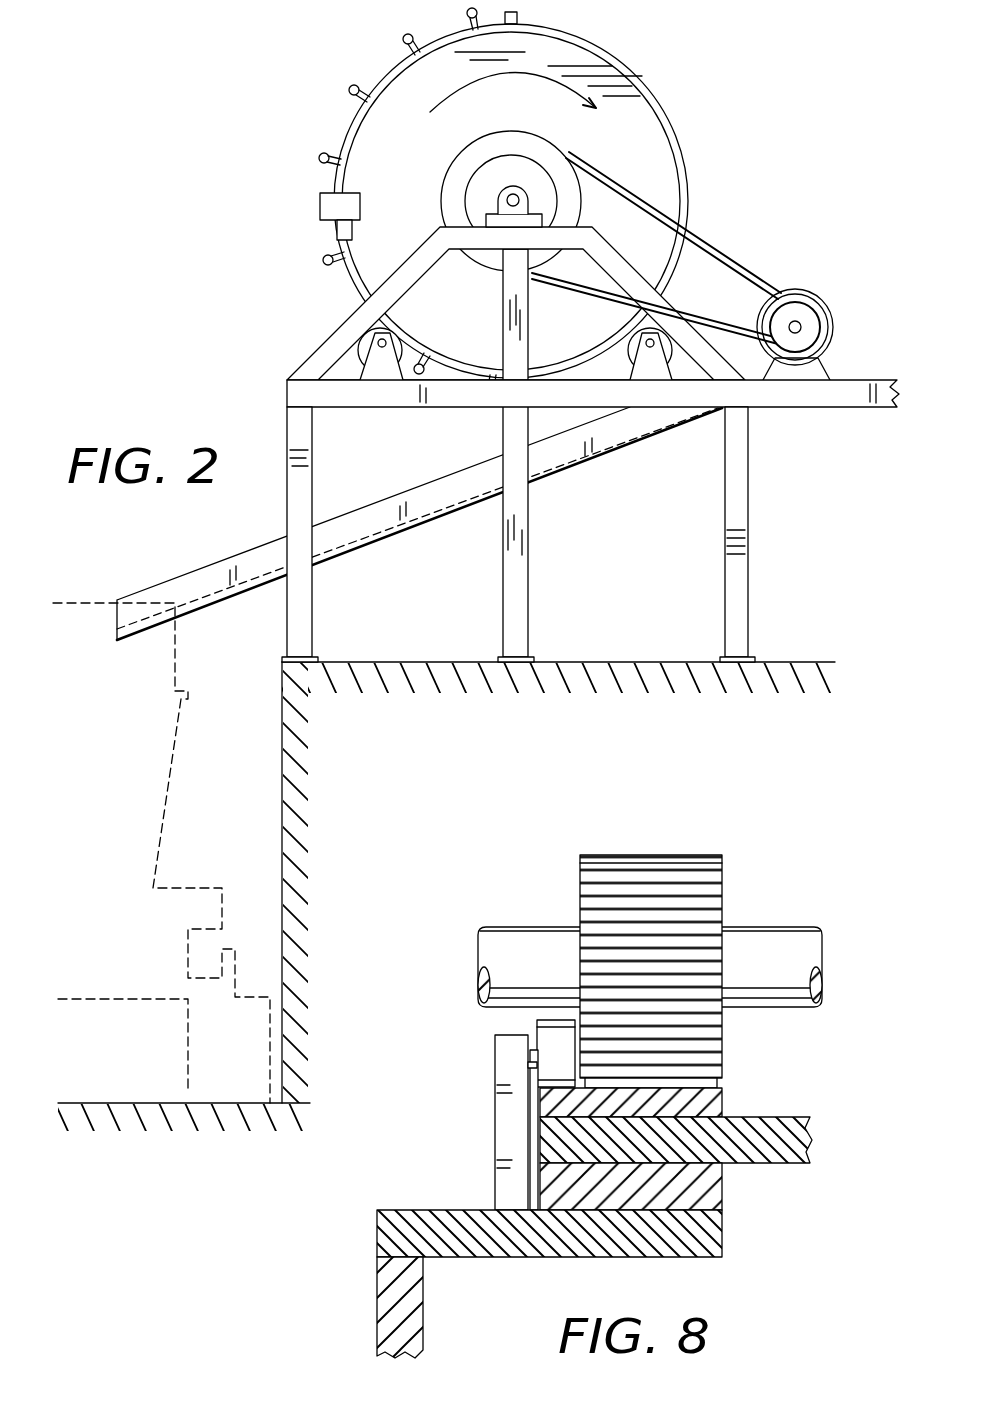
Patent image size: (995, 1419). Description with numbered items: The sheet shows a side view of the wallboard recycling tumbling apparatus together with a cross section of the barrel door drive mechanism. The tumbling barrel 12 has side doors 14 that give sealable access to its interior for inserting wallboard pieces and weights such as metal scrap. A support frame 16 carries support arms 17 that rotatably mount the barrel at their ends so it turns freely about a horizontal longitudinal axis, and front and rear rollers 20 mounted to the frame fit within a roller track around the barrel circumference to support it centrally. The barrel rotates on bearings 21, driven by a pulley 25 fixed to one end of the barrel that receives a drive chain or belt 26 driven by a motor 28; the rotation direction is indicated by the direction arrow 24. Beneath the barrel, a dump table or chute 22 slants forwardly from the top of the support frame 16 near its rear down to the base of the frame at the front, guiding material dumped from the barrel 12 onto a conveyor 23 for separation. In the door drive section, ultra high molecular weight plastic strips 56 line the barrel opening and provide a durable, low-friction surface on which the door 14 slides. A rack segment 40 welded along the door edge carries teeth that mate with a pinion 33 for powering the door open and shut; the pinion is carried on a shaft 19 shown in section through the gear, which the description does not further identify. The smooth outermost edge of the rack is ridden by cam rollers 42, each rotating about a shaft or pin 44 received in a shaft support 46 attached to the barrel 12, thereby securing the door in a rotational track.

In FIG. 2, the tumbling barrel 12 is at (668, 120).
In FIG. 8, the tumbling barrel 12 is at (723, 1227).
In FIG. 2, the side door 14 is at (383, 78).
In FIG. 8, the side door 14 is at (768, 1115).
In FIG. 2, the support frame 16 is at (748, 520).
In FIG. 2, the support arms 17 is at (338, 325).
In FIG. 8, the shaft 19 is at (783, 927).
In FIG. 2, the front and rear rollers 20 is at (393, 329).
In FIG. 2, the bearings 21 is at (498, 191).
In FIG. 2, the dump table or chute 22 is at (448, 518).
In FIG. 2, the conveyor 23 is at (178, 684).
In FIG. 2, the direction arrow 24 is at (458, 112).
In FIG. 2, the pulley 25 is at (533, 150).
In FIG. 2, the drive chain or belt 26 is at (754, 270).
In FIG. 2, the motor 28 is at (837, 320).
In FIG. 8, the pinion 33 is at (690, 853).
In FIG. 8, the rack segment 40 is at (723, 1098).
In FIG. 8, the cam roller 42 is at (558, 1020).
In FIG. 8, the shaft or pin 44 is at (533, 1057).
In FIG. 8, the shaft support 46 is at (493, 1103).
In FIG. 8, the ultra high molecular weight plastic strips 56 is at (723, 1185).